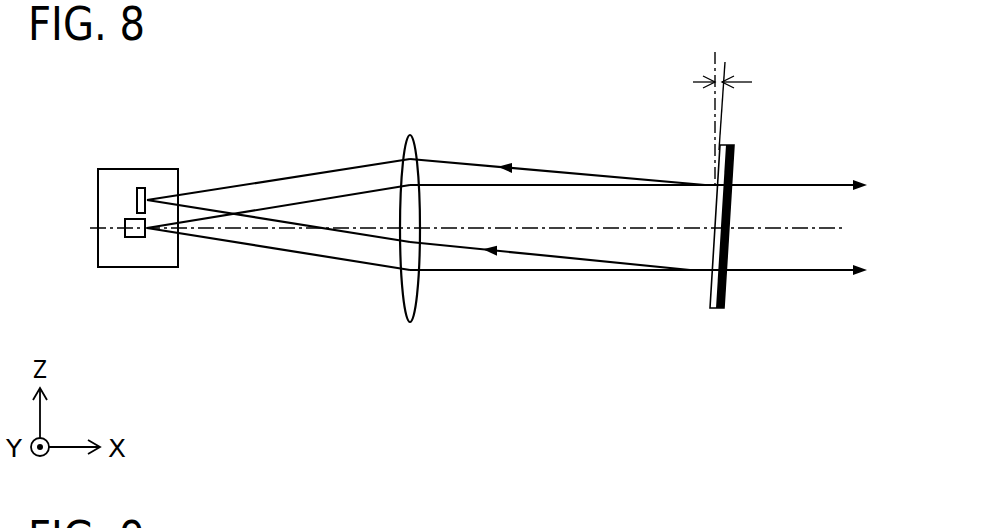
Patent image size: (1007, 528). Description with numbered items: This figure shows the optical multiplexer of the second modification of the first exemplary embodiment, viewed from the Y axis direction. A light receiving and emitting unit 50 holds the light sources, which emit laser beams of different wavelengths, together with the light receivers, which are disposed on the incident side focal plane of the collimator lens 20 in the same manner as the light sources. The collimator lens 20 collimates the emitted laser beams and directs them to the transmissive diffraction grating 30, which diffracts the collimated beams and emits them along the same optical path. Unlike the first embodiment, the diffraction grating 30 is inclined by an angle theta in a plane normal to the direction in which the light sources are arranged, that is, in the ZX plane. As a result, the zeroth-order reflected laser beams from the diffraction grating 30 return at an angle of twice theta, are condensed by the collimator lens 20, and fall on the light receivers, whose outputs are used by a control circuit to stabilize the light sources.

The housing / package 50 is at (110, 169).
The collimator lens 20 is at (410, 135).
The transmissive diffraction grating 30 is at (735, 160).